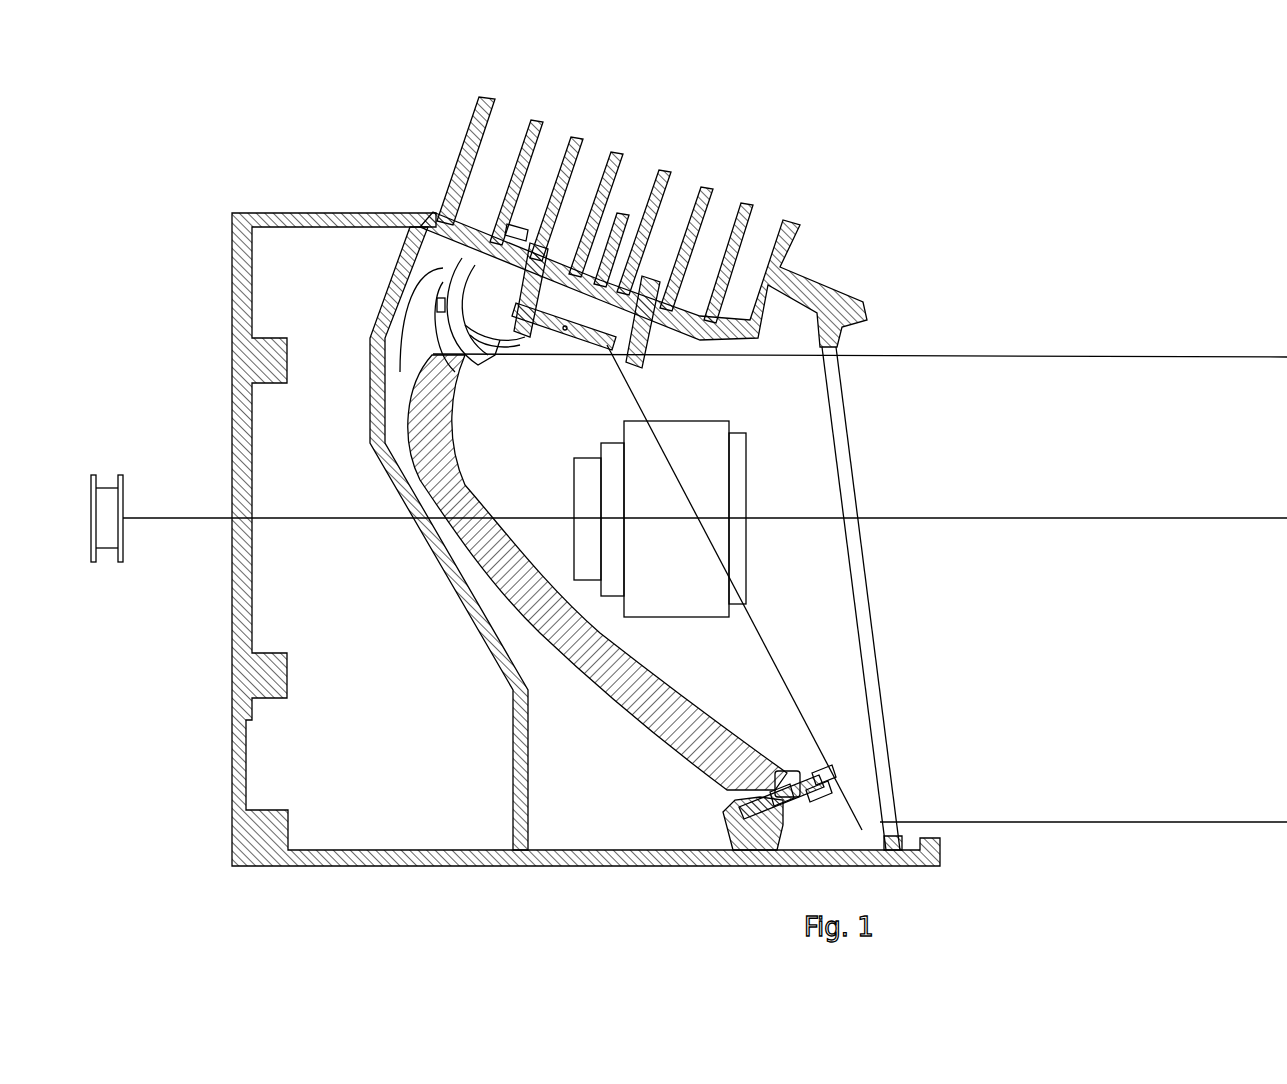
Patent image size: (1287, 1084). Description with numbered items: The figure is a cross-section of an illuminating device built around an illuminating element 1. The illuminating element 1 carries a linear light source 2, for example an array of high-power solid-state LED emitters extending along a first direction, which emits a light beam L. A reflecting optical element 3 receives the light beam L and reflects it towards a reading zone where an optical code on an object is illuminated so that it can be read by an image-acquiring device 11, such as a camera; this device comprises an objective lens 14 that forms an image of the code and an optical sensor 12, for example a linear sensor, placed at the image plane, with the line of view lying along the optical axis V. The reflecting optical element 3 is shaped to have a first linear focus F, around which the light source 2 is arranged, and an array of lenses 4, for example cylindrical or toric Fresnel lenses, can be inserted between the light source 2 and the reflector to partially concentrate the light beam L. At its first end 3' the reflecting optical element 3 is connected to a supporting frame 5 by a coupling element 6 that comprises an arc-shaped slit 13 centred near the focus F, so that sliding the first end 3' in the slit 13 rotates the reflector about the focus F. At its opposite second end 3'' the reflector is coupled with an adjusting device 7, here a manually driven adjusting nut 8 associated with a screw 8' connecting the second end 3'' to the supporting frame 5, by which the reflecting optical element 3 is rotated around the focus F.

The illuminating element 1 is at (903, 253).
The linear light source 2 is at (612, 300).
The reflecting optical element 3 is at (699, 576).
The first end 3' is at (441, 226).
The second end 3'' is at (918, 598).
The array of lenses 4 is at (597, 330).
The supporting frame 5 is at (382, 305).
The coupling element 6 is at (457, 265).
The adjusting device 7 is at (866, 778).
The adjusting nut 8 is at (907, 878).
The screw 8' is at (735, 860).
The image-acquiring device 11 is at (102, 437).
The optical sensor 12 is at (93, 517).
The arc-shaped slit 13 is at (468, 340).
The objective lens 14 is at (740, 478).
The first linear focus F is at (565, 328).
The light beam L is at (1055, 358).
The optical axis V is at (1105, 516).